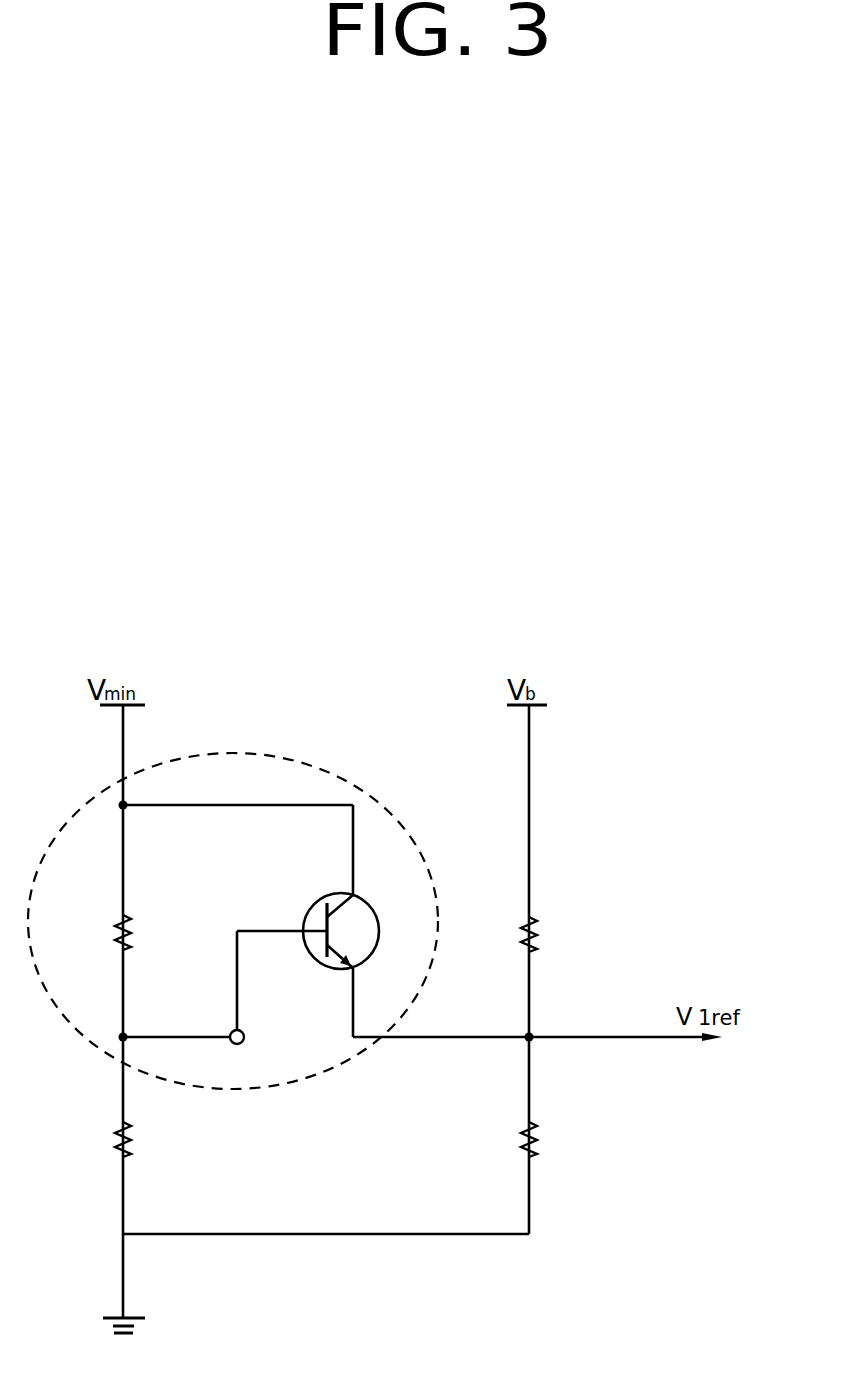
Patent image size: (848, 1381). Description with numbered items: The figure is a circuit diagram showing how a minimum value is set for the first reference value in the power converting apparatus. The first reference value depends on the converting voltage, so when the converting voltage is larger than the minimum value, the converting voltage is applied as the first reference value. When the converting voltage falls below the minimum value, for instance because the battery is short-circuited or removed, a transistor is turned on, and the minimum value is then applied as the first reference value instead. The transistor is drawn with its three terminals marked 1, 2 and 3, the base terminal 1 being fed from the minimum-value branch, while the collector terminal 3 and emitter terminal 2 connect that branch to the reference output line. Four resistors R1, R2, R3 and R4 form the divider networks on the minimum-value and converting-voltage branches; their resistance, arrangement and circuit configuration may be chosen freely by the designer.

The base terminal of transistor 1 is at (306, 930).
The emitter terminal of transistor 2 is at (340, 971).
The collector terminal of transistor 3 is at (340, 892).
The resistor R1 is at (101, 932).
The resistor R2 is at (101, 1139).
The resistor R3 is at (507, 934).
The resistor R4 is at (507, 1139).